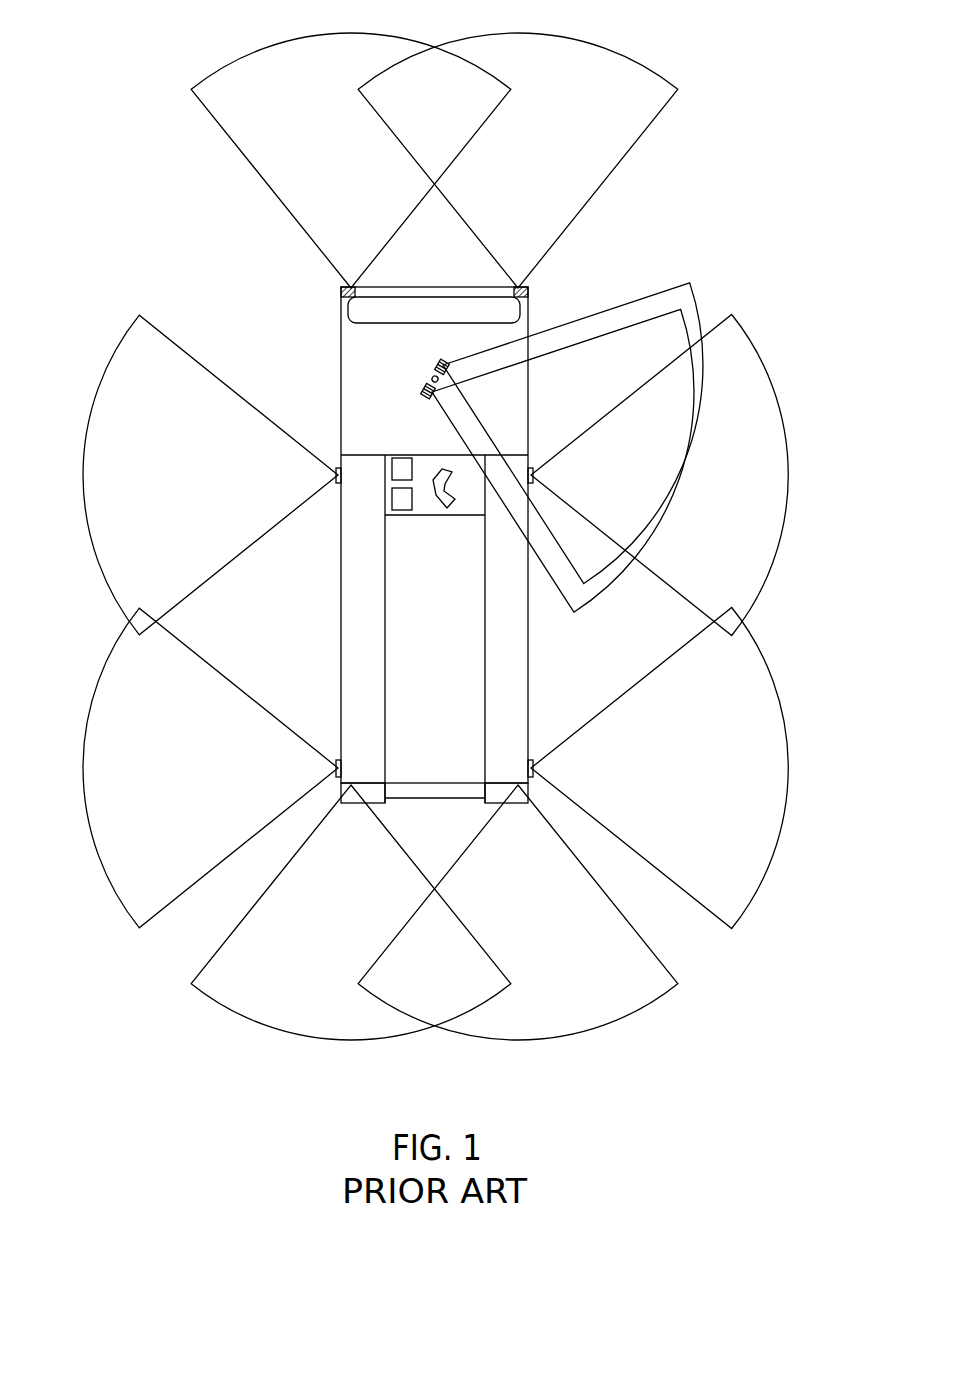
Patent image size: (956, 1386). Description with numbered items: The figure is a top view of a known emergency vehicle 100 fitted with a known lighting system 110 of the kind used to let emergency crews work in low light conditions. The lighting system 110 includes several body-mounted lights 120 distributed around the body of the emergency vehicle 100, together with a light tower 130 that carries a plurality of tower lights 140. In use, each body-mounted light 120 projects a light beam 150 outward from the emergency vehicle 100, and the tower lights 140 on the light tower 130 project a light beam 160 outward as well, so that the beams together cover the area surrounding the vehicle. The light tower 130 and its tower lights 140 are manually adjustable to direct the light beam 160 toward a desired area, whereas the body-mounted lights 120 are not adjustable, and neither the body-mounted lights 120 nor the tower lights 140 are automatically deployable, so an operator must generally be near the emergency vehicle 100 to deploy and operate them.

The emergency vehicle 100 is at (508, 658).
The lighting system 110 is at (740, 952).
The body-mounted light 120 is at (340, 292).
The light tower 130 is at (420, 383).
The tower lights 140 is at (383, 340).
The light beams 150 is at (435, 536).
The light beams 160 is at (567, 447).